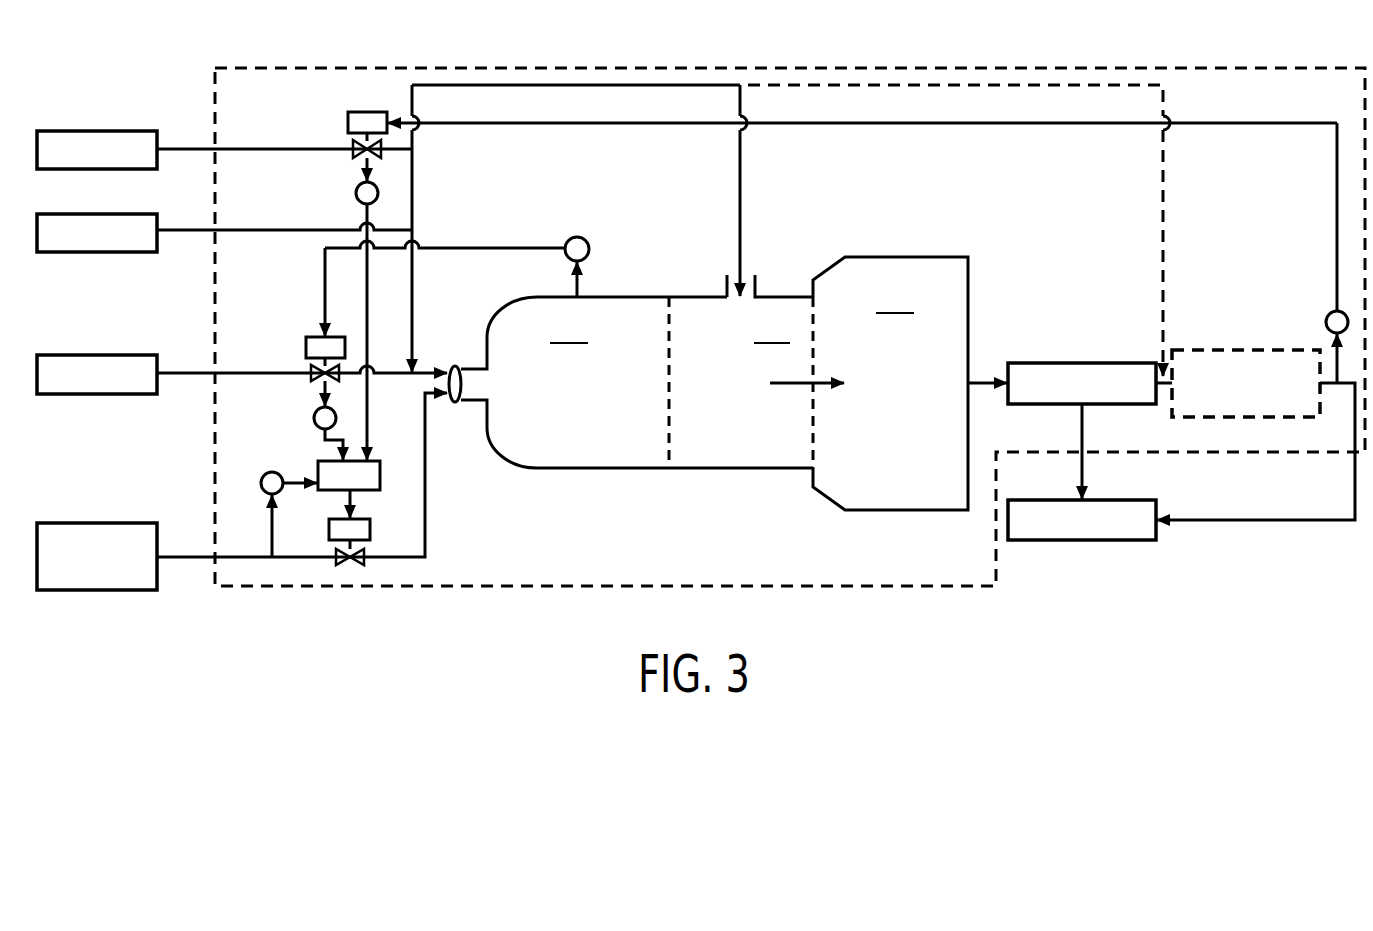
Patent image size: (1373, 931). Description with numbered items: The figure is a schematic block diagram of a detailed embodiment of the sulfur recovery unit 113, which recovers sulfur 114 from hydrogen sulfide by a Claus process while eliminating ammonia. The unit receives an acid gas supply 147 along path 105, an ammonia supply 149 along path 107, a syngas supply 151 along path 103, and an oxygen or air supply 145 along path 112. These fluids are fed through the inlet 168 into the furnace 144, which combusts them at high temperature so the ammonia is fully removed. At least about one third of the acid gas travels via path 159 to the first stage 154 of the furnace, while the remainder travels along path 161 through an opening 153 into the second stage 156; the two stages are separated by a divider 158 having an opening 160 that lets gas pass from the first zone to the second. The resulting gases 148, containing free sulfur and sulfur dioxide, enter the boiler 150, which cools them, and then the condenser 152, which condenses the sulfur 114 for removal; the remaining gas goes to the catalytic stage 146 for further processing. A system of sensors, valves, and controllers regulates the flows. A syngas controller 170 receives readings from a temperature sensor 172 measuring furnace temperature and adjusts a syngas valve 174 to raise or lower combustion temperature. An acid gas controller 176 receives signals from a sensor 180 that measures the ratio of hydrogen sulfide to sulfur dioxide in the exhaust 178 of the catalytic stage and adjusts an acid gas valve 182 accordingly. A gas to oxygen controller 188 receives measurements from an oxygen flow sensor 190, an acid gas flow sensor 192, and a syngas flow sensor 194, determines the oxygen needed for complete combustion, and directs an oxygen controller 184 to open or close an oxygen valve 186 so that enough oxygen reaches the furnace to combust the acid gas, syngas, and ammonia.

The sulfur recovery unit 113 is at (478, 67).
The acid gas supply 147 is at (98, 129).
The ammonia supply 149 is at (98, 213).
The syngas supply 151 is at (98, 354).
The oxygen supply 145 is at (98, 523).
The acid gas path 105 is at (187, 148).
The ammonia path 107 is at (187, 230).
The syngas path 103 is at (187, 373).
The oxygen path 112 is at (187, 557).
The first acid gas path 159 is at (413, 196).
The second acid gas path 161 is at (740, 195).
The acid gas controller 176 is at (366, 112).
The acid gas valve 182 is at (355, 146).
The acid gas flow sensor 192 is at (356, 198).
The temperature sensor 172 is at (587, 246).
The syngas controller 170 is at (306, 337).
The syngas valve 174 is at (312, 371).
The syngas flow sensor 194 is at (314, 412).
The gas to oxygen controller 188 is at (383, 473).
The oxygen flow sensor 190 is at (263, 478).
The oxygen controller 184 is at (372, 535).
The oxygen valve 186 is at (364, 560).
The inlet 168 is at (473, 388).
The furnace 144 is at (637, 376).
The first stage 154 is at (637, 371).
The second stage 156 is at (783, 382).
The divider 158 is at (672, 342).
The opening 160 is at (670, 452).
The opening 153 is at (756, 282).
The boiler 150 is at (890, 383).
The gases 148 is at (807, 386).
The condenser 152 is at (1083, 363).
The catalytic stage 146 is at (1247, 348).
The exhaust 178 is at (1342, 386).
The sensor 180 is at (1327, 315).
The sulfur 114 is at (1085, 543).